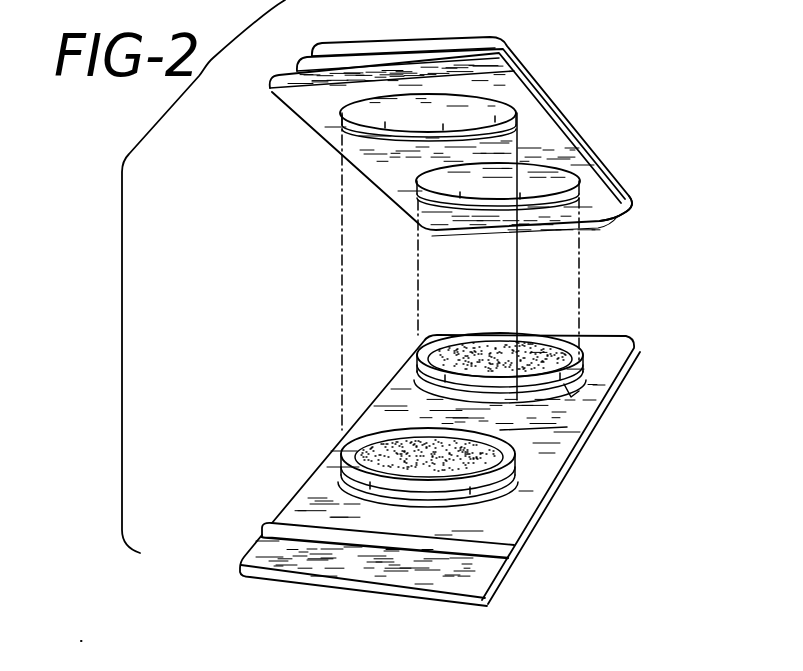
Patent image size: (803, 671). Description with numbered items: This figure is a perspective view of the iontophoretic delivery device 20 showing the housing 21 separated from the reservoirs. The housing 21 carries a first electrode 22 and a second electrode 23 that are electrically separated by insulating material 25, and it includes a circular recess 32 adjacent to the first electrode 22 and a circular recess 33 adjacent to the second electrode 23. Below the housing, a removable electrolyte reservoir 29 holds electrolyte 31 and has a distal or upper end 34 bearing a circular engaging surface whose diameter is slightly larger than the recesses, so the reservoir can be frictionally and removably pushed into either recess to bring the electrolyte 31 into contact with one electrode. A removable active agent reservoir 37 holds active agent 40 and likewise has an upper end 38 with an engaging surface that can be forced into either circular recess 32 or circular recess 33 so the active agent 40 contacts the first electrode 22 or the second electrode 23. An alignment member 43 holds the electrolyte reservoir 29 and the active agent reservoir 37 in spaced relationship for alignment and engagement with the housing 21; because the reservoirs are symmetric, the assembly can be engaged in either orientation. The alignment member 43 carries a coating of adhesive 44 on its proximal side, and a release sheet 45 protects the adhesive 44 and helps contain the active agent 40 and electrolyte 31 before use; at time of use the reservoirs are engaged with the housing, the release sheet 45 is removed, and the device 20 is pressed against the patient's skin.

The iontophoretic delivery device 20 is at (238, 313).
The housing 21 is at (580, 147).
The first electrode 22 is at (338, 111).
The second electrode 23 is at (497, 180).
The insulating material 25 is at (515, 155).
The electrolyte reservoir 29 is at (580, 397).
The electrolyte 31 is at (533, 353).
The circular recess 32 is at (393, 124).
The circular recess 33 is at (630, 204).
The upper end 34 is at (598, 335).
The active agent reservoir 37 is at (505, 482).
The upper end 38 is at (377, 440).
The active agent 40 is at (360, 455).
The alignment member 43 is at (567, 427).
The adhesive 44 is at (245, 567).
The release sheet 45 is at (392, 566).